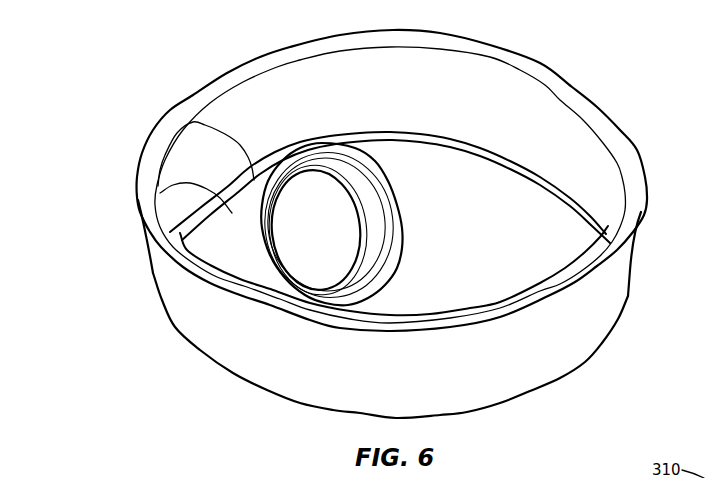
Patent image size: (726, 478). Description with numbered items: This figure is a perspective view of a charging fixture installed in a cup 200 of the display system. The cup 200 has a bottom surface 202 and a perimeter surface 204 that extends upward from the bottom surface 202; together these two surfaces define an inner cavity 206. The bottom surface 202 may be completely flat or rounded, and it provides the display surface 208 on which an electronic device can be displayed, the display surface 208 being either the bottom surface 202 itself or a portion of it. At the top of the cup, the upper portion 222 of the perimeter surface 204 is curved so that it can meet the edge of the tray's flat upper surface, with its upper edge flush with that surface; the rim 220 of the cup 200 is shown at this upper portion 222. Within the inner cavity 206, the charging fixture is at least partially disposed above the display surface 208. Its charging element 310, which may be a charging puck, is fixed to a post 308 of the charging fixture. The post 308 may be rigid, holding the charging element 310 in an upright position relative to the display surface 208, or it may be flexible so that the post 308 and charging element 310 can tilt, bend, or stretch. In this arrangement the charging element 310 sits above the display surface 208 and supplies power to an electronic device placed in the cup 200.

The cup 200 is at (110, 124).
The bottom surface 202 is at (143, 205).
The perimeter surface 204 is at (590, 170).
The inner cavity 206 is at (193, 122).
The display surface 208 is at (497, 256).
The rim 220 is at (590, 92).
The upper portion of perimeter surface 222 is at (518, 68).
The post 308 is at (308, 300).
The charging element 310 is at (333, 245).